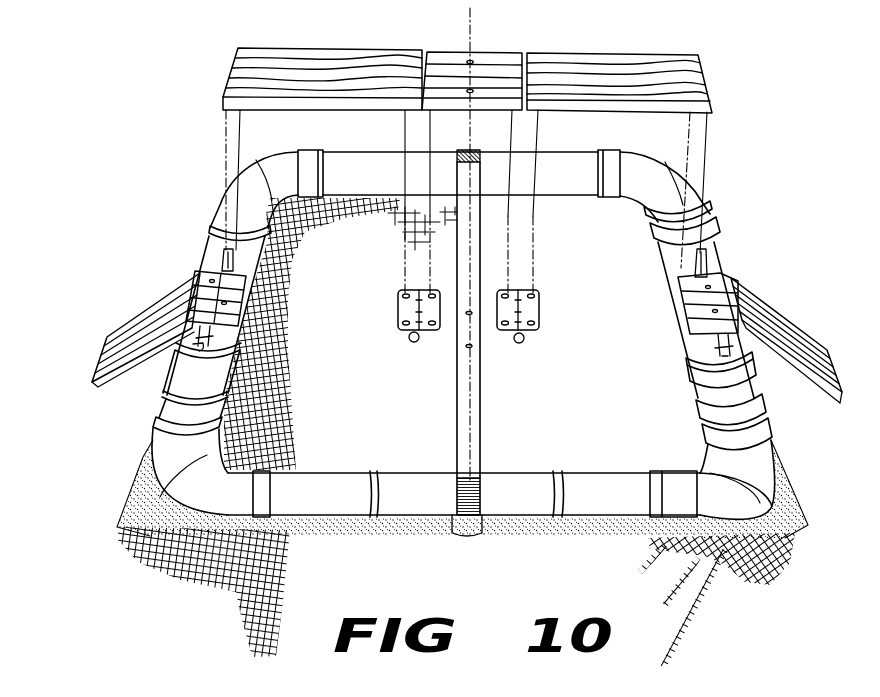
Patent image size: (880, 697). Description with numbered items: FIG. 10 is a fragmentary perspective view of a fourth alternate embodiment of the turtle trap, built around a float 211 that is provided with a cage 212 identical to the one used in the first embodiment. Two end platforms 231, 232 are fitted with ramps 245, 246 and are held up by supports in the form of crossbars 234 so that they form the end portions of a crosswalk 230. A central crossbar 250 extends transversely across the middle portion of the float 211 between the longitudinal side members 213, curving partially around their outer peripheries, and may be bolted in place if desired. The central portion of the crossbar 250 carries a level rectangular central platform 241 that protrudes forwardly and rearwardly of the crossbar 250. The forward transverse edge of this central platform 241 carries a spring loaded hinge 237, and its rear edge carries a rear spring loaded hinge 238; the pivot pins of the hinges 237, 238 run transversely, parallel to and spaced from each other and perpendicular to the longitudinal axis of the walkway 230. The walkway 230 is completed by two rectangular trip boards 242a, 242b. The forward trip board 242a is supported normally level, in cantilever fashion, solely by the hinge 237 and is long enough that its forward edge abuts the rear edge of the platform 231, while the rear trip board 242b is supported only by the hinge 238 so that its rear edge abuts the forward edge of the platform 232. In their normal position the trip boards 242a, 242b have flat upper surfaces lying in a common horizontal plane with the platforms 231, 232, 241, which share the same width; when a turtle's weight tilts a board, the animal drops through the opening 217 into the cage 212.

The float 211 is at (555, 167).
The cage 212 is at (148, 567).
The longitudinal side members 213 is at (517, 487).
The opening 217 is at (630, 240).
The crosswalk 230 is at (243, 293).
The platform 231 is at (247, 311).
The platform 232 is at (723, 280).
The crossbars 234 is at (285, 377).
The spring loaded hinge 237 is at (405, 331).
The rear spring loaded hinge 238 is at (522, 343).
The central platform 241 is at (495, 62).
The forward trip board 242a is at (315, 55).
The rear trip board 242b is at (597, 63).
The ramp 245 is at (158, 305).
The ramp 246 is at (775, 320).
The central crossbar 250 is at (472, 432).